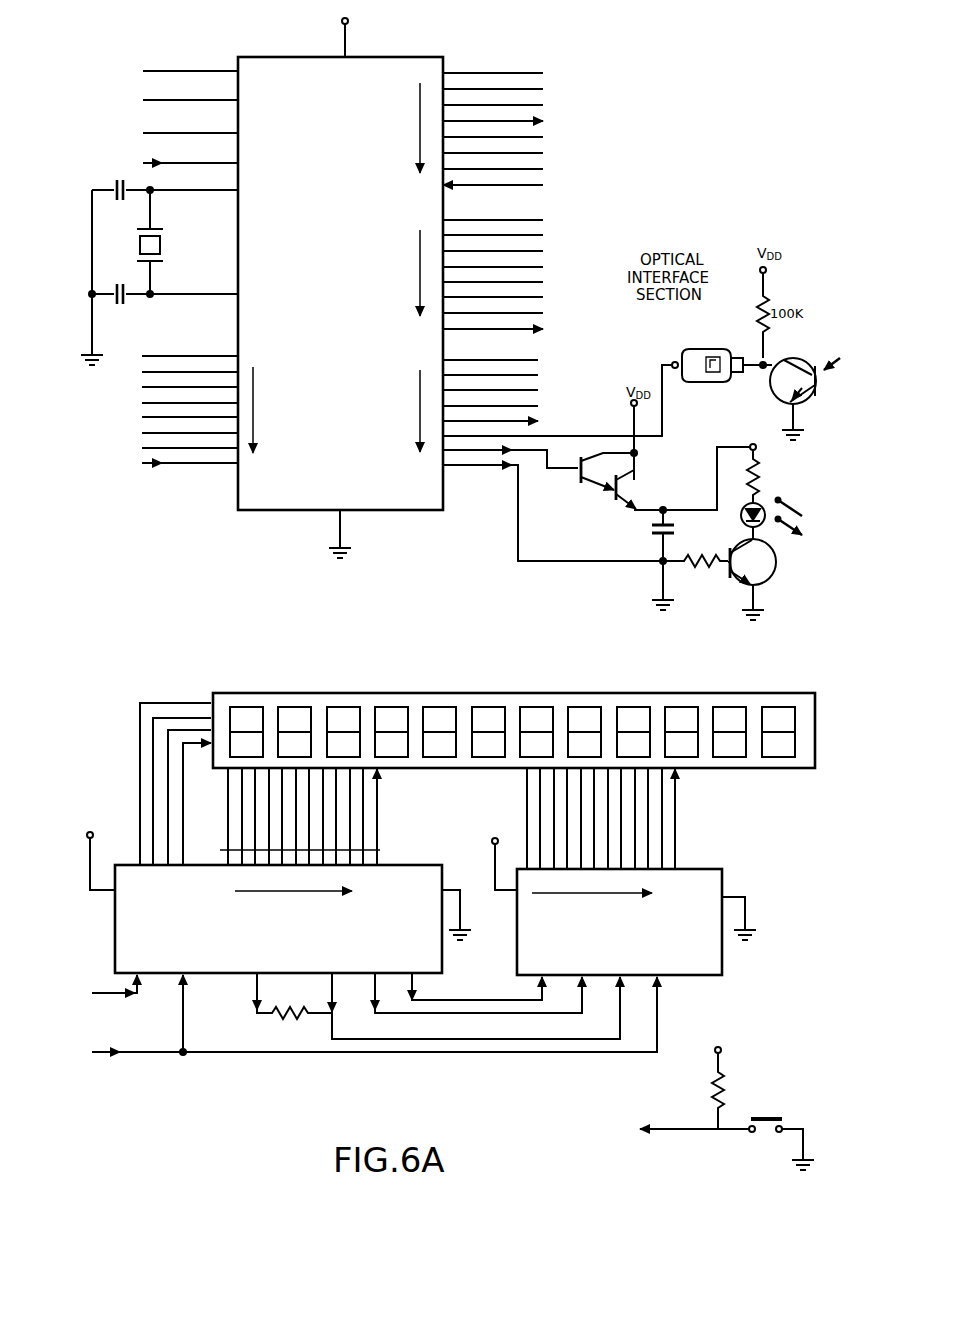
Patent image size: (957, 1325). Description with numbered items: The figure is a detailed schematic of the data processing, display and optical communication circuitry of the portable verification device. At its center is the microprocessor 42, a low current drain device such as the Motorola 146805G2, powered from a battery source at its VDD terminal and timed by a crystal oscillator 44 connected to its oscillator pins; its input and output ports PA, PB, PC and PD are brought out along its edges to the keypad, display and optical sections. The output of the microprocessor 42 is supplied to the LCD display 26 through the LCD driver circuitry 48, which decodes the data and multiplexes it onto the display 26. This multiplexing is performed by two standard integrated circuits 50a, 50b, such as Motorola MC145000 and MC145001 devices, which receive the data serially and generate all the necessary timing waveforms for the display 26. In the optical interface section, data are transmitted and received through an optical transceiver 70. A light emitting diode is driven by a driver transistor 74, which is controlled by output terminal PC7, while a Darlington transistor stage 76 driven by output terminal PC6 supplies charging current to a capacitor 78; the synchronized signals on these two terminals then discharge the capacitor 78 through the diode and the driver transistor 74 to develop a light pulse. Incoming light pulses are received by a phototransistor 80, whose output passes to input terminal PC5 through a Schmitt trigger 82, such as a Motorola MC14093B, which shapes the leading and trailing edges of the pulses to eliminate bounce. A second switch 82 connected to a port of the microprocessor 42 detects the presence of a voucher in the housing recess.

The microprocessor 42 is at (313, 90).
The crystal oscillator 44 is at (87, 214).
The optical transceiver 70 is at (512, 542).
The driver transistor 74 is at (760, 587).
The Darlington transistor stage 76 is at (600, 497).
The capacitor 78 is at (662, 539).
The phototransistor 80 is at (812, 403).
The Schmitt trigger 82 is at (712, 343).
The LCD display 26 is at (815, 770).
The LCD driver circuitry 48 is at (446, 832).
The multiplexing integrated circuit 50a is at (436, 944).
The multiplexing integrated circuit 50b is at (708, 963).